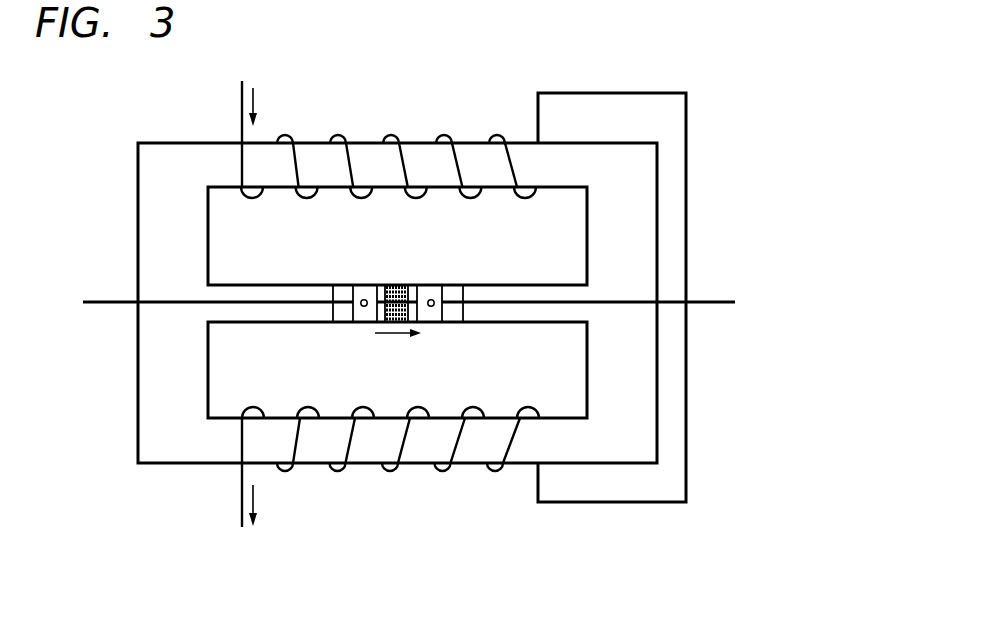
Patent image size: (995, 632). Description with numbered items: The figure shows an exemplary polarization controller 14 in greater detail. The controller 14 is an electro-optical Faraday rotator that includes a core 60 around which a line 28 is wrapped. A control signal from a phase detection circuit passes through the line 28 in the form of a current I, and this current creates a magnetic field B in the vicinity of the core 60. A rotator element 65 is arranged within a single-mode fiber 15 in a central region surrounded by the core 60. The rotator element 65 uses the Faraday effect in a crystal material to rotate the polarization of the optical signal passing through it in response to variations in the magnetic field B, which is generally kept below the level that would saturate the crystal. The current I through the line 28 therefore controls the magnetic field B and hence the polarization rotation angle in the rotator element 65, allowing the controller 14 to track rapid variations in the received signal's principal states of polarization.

The polarization controller 14 is at (90, 166).
The single-mode fiber 15 is at (107, 301).
The line 28 is at (242, 135).
The core 60 is at (138, 358).
The rotator element 65 is at (407, 278).